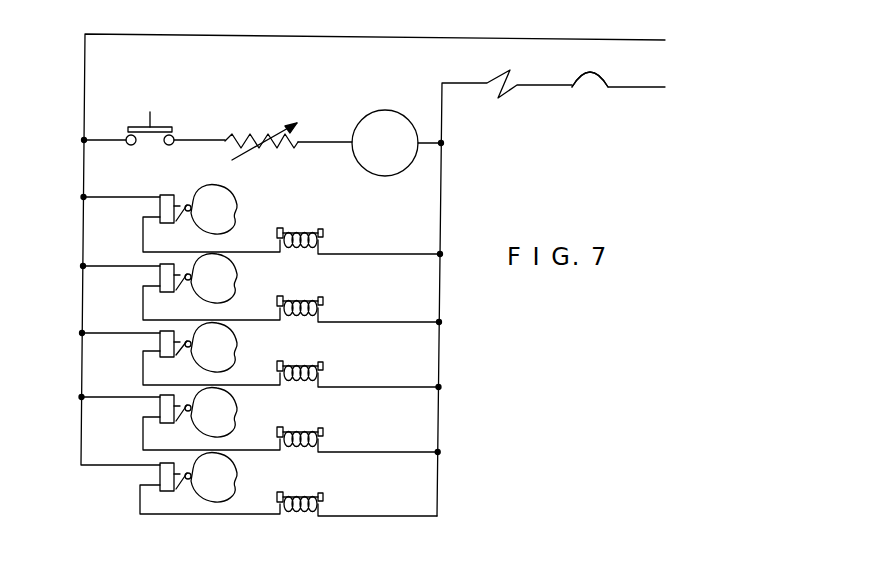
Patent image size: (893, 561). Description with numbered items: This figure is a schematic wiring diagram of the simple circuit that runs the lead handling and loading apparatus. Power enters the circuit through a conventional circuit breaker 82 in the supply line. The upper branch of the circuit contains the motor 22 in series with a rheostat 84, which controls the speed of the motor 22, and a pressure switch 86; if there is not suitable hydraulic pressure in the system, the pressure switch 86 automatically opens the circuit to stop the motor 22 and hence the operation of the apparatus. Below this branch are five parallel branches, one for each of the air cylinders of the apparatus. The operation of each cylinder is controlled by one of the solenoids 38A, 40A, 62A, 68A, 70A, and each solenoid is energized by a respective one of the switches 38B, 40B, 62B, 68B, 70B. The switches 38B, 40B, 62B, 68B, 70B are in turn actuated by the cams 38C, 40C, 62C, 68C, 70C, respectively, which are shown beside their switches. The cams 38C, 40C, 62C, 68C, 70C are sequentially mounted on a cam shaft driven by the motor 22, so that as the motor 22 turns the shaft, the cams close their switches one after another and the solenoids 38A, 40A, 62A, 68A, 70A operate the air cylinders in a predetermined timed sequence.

The motor 22 is at (402, 128).
The circuit breaker 82 is at (595, 85).
The rheostat 84 is at (258, 132).
The pressure switch 86 is at (160, 116).
The solenoid 38A is at (315, 232).
The switch 38B is at (168, 202).
The cam 38C is at (230, 202).
The solenoid 40A is at (310, 300).
The switch 40B is at (163, 275).
The cam 40C is at (228, 278).
The solenoid 62A is at (312, 365).
The switch 62B is at (163, 340).
The cam 62C is at (233, 346).
The solenoid 68A is at (310, 432).
The switch 68B is at (160, 405).
The cam 68C is at (222, 412).
The solenoid 70A is at (312, 497).
The switch 70B is at (160, 470).
The cam 70C is at (225, 478).